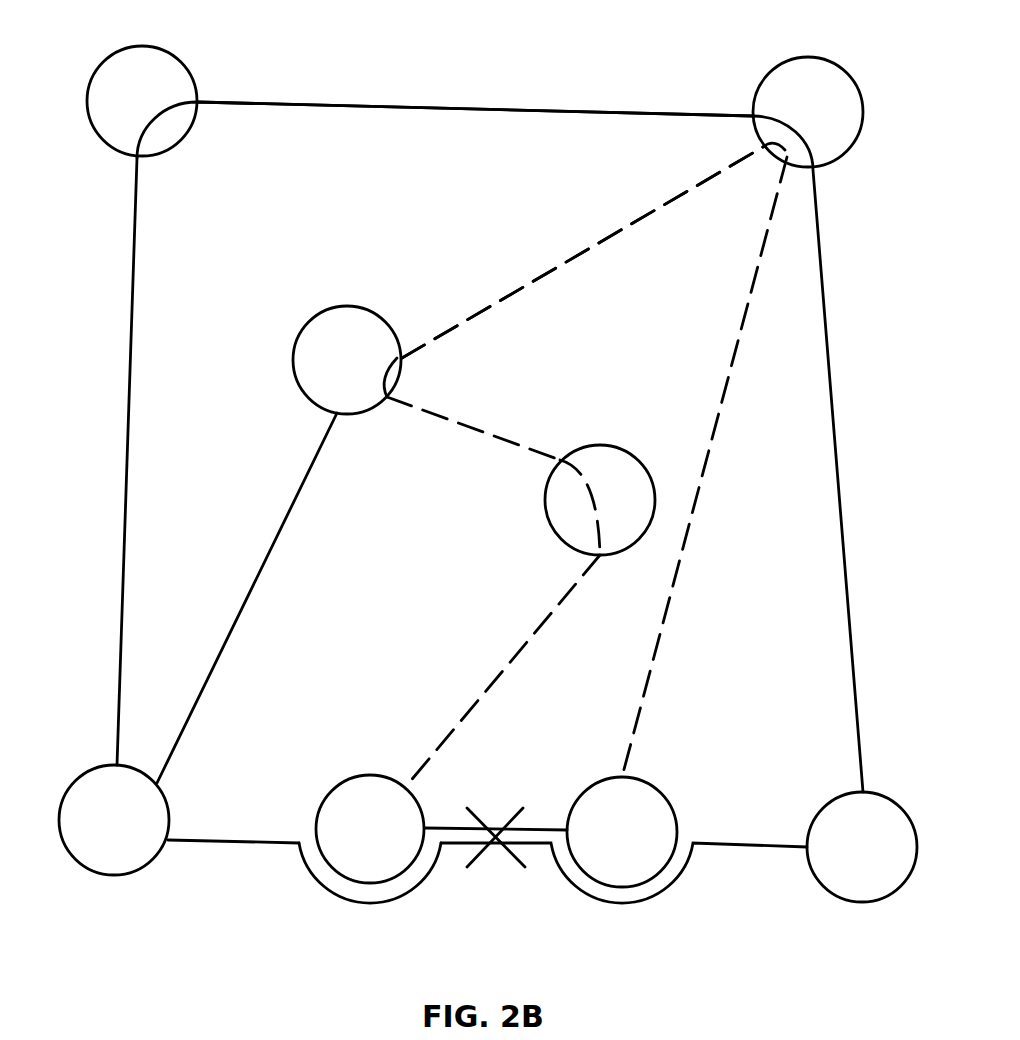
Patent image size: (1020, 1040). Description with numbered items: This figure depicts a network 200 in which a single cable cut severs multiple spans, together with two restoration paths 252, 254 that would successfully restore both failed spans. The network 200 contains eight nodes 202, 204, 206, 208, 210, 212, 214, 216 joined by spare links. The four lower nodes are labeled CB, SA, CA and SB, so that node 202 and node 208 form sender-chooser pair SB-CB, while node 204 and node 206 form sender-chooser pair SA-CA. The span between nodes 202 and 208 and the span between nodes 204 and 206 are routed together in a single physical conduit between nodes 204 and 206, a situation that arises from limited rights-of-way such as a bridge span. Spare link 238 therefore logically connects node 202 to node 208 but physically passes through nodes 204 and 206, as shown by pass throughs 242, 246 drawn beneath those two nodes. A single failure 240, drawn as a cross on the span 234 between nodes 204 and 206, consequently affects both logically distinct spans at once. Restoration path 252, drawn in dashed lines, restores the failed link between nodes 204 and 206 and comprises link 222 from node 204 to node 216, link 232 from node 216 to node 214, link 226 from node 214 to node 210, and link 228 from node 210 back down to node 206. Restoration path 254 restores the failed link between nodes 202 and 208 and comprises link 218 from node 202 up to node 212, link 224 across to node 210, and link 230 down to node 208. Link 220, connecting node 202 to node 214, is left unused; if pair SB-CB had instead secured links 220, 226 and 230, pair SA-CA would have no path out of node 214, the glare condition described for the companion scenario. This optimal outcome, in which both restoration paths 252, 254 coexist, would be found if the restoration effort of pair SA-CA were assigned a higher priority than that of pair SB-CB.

The network 200 is at (931, 224).
The node 202 is at (96, 768).
The node 204 is at (345, 777).
The node 206 is at (592, 782).
The node 208 is at (822, 808).
The node 210 is at (805, 58).
The node 212 is at (117, 50).
The node 214 is at (325, 307).
The node 216 is at (617, 447).
The link 218 is at (128, 393).
The link 220 is at (278, 533).
The link 222 is at (508, 668).
The link 224 is at (478, 110).
The link 226 is at (590, 248).
The link 228 is at (697, 490).
The link 230 is at (840, 568).
The link 232 is at (474, 423).
The failed link 234 is at (440, 828).
The spare link 238 is at (237, 843).
The failure 240 is at (513, 862).
The pass through 242 is at (362, 908).
The pass through 246 is at (620, 908).
The restoration path 252 is at (655, 208).
The restoration path 254 is at (312, 105).